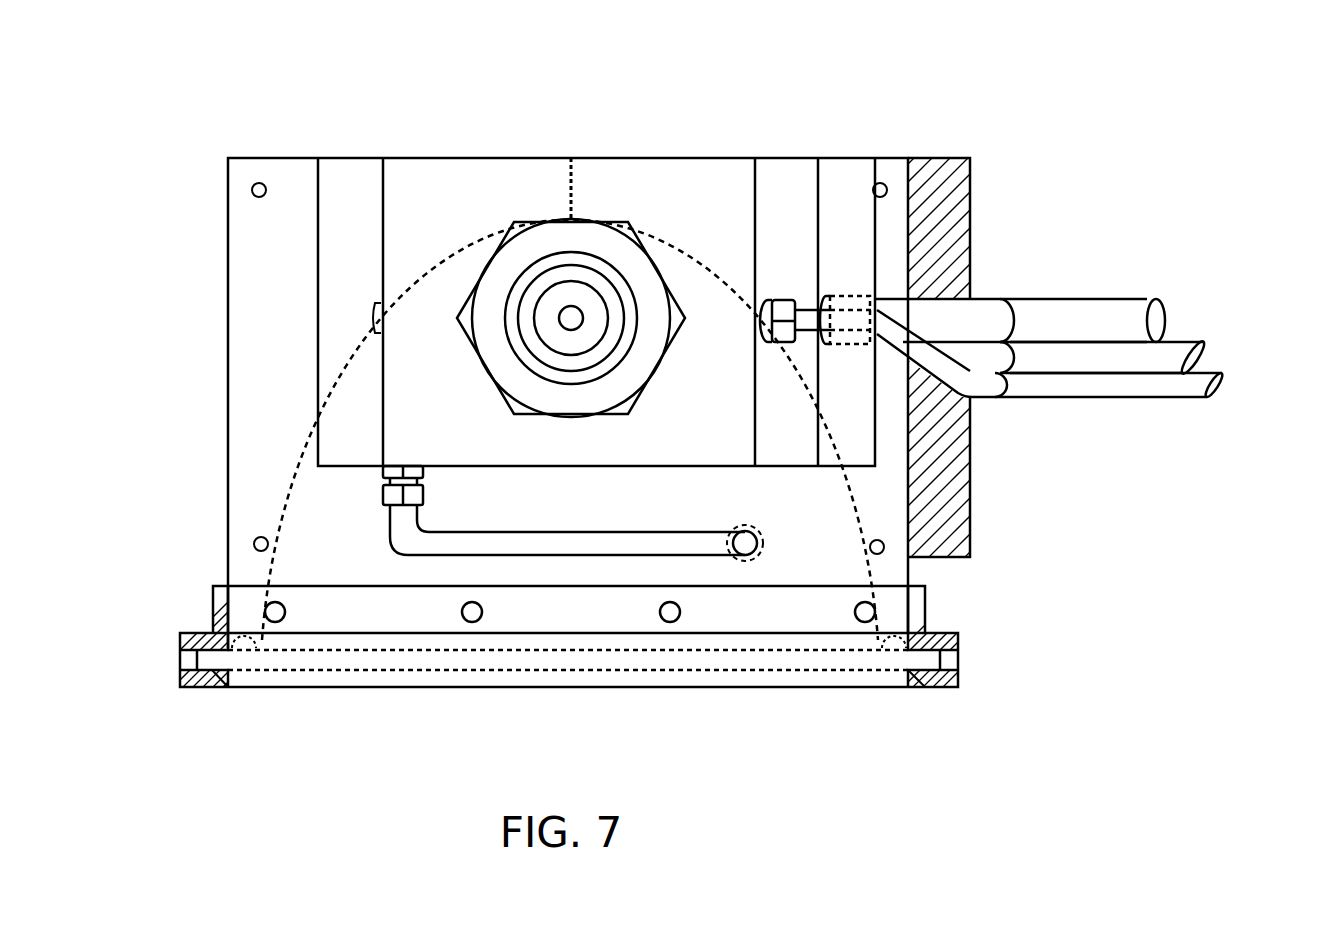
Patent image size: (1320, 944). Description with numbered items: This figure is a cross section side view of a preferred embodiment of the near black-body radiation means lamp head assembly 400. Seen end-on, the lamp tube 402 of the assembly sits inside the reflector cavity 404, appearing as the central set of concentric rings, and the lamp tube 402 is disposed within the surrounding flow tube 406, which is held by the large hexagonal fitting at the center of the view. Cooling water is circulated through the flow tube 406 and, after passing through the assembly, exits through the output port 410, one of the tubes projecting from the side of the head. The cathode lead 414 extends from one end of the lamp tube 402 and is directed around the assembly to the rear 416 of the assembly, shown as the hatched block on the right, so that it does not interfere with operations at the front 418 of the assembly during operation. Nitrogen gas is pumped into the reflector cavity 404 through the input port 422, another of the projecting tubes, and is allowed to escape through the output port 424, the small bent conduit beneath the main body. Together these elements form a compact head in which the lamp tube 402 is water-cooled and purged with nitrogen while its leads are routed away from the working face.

The lamp head assembly 400 is at (711, 385).
The lamp tube 402 is at (607, 307).
The reflector cavity 404 is at (227, 255).
The flow tube 406 is at (525, 272).
The output port 410 is at (1203, 347).
The cathode lead 414 is at (1083, 298).
The rear 416 is at (973, 557).
The front 418 is at (227, 487).
The input port 422 is at (1203, 400).
The output port 424 is at (470, 555).